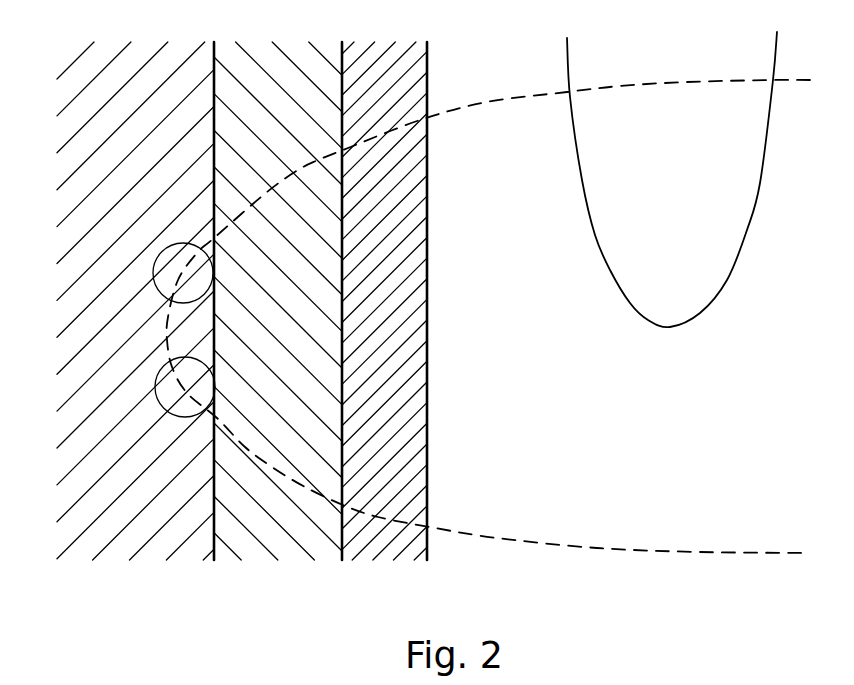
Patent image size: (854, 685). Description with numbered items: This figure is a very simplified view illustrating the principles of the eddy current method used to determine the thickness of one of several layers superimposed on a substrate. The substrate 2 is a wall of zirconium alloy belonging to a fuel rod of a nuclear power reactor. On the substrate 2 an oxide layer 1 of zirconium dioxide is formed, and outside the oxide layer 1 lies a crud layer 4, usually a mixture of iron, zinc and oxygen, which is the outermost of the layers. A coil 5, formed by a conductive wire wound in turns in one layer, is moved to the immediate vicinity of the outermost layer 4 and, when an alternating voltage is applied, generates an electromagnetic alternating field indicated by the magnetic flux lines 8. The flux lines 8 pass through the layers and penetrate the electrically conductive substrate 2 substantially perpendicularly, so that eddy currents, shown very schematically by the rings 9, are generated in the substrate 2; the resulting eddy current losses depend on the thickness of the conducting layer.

The oxide layer 1 is at (298, 548).
The substrate 2 is at (153, 553).
The crud layer 4 is at (387, 548).
The coil 5 is at (630, 308).
The magnetic flux lines 8 is at (503, 538).
The rings 9 is at (162, 258).